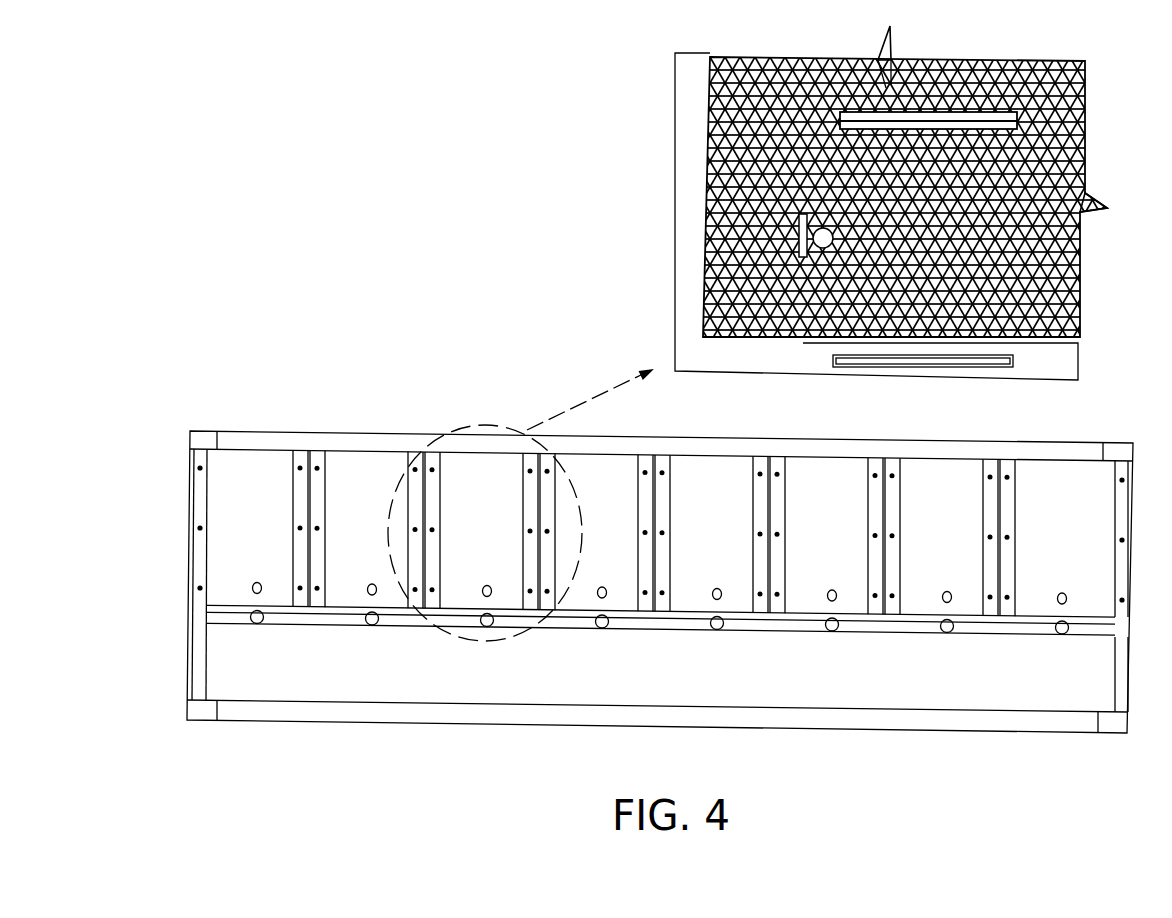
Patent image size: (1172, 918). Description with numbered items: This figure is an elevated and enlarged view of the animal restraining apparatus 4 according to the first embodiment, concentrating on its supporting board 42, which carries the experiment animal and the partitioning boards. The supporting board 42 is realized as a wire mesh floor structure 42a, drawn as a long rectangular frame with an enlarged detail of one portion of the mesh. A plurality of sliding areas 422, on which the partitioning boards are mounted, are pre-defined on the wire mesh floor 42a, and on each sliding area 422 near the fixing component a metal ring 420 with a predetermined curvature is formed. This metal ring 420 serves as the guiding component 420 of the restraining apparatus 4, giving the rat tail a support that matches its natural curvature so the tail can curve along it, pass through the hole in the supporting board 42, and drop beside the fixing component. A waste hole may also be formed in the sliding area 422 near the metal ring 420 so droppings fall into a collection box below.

The restraining apparatus 4 is at (660, 594).
The supporting board 42 is at (877, 227).
The wire mesh floor structure 42a is at (1085, 113).
The guiding component 420 is at (751, 337).
The sliding area 422 is at (777, 95).